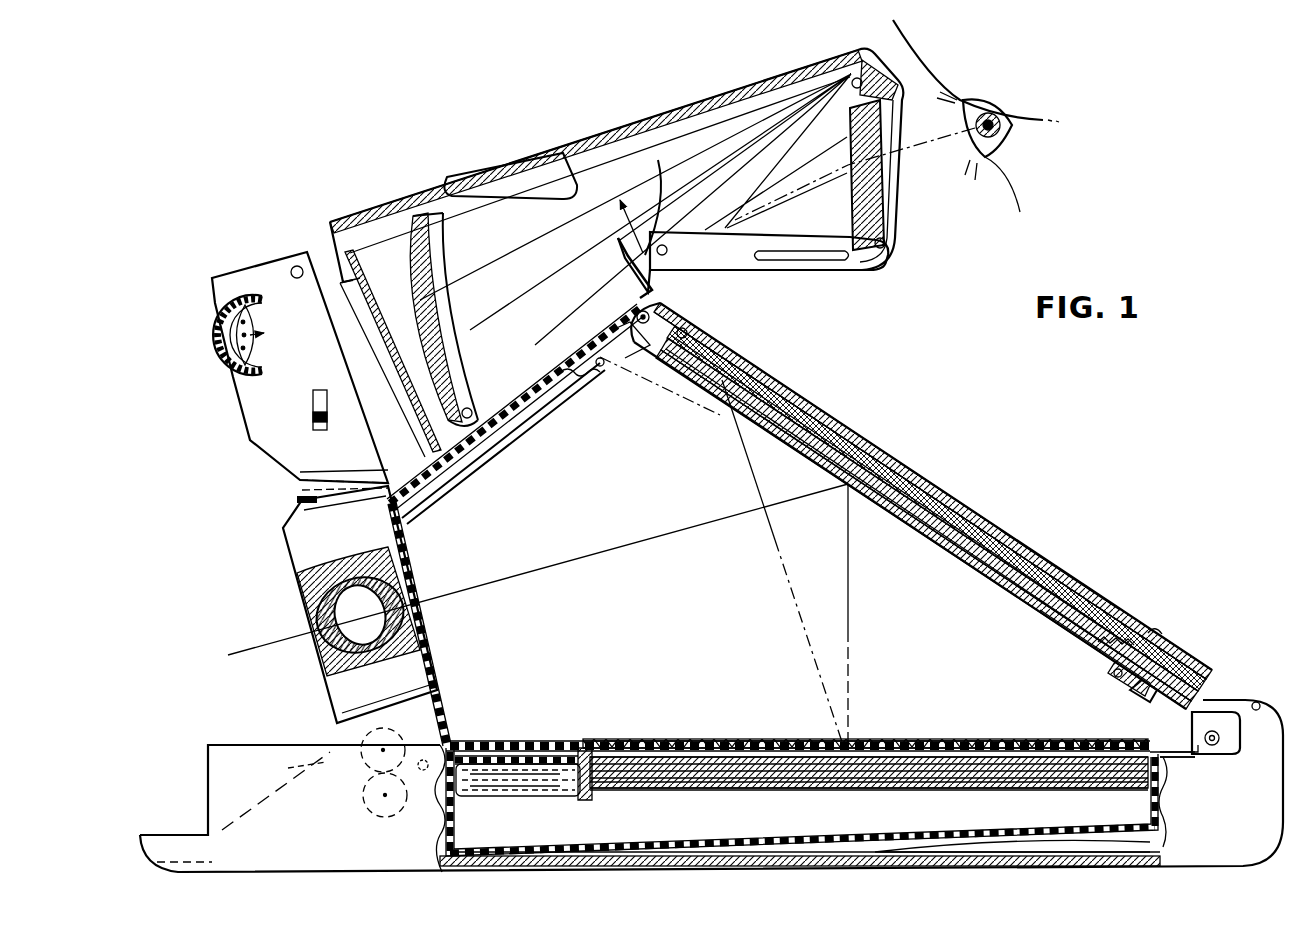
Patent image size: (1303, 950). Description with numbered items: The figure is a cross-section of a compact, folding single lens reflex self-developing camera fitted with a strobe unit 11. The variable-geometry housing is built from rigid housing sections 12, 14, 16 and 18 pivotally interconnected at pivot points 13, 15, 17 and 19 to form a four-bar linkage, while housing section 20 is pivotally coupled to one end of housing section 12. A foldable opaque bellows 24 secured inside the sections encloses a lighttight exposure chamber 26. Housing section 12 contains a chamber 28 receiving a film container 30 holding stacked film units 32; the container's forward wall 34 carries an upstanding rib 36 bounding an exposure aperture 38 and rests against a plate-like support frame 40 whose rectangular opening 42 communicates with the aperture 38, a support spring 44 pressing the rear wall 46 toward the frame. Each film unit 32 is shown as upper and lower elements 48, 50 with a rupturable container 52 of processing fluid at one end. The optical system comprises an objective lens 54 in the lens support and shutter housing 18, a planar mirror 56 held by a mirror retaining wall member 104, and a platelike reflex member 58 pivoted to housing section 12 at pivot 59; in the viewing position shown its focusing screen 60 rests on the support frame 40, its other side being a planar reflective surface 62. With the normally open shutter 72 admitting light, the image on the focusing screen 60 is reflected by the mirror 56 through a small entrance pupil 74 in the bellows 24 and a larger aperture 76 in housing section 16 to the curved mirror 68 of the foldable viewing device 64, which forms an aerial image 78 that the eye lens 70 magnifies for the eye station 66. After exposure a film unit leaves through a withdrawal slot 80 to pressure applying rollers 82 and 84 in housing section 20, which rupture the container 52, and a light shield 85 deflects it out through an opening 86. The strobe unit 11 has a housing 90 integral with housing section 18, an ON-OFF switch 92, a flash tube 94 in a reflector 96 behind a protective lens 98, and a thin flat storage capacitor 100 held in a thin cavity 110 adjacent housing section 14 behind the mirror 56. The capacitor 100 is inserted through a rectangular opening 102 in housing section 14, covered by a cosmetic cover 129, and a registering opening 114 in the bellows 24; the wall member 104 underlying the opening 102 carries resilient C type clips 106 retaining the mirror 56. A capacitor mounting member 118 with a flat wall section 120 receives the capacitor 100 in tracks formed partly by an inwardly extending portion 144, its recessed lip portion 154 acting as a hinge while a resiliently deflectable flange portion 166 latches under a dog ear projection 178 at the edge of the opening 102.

The strobe unit 11 is at (232, 402).
The first housing section 12 is at (1032, 866).
The pivot point 13 is at (1258, 700).
The housing section 14 is at (1060, 622).
The pivot point 15 is at (625, 292).
The housing section 16 is at (440, 450).
The pivot point 17 is at (360, 482).
The lens support and shutter housing 18 is at (300, 503).
The pivot point 19 is at (432, 708).
The housing section 20 is at (332, 872).
The bellows 24 is at (1202, 700).
The exposure chamber 26 is at (442, 532).
The chamber 28 is at (935, 850).
The film container 30 is at (1098, 838).
The film unit 32 is at (727, 794).
The forward wall 34 is at (530, 756).
The upstanding rib 36 is at (590, 750).
The exposure aperture 38 is at (662, 740).
The support frame 40 is at (470, 746).
The rectangular opening 42 is at (1118, 742).
The support spring 44 is at (814, 850).
The rear wall 46 is at (684, 858).
The upper element 48 is at (768, 780).
The lower element 50 is at (758, 757).
The rupturable container 52 is at (535, 796).
The objective lens 54 is at (318, 613).
The planar mirror 56 is at (946, 552).
The reflex member 58 is at (990, 727).
The pivot 59 is at (1208, 746).
The focusing screen 60 is at (896, 741).
The planar reflective surface 62 is at (850, 745).
The viewing device 64 is at (440, 172).
The eye station 66 is at (968, 156).
The curved mirror 68 is at (465, 285).
The eye lens 70 is at (850, 205).
The shutter 72 is at (378, 560).
The entrance pupil 74 is at (596, 366).
The aperture 76 is at (533, 380).
The aerial image 78 is at (670, 180).
The withdrawal slot 80 is at (447, 775).
The pressure applying roller 82 is at (404, 755).
The pressure applying roller 84 is at (362, 795).
The light shield 85 is at (290, 770).
The opening 86 is at (203, 866).
The strobe housing 90 is at (283, 258).
The ON-OFF switch 92 is at (313, 408).
The flash tube 94 is at (212, 322).
The reflector 96 is at (245, 300).
The lens 98 is at (212, 343).
The storage capacitor 100 is at (890, 477).
The rectangular opening 102 is at (700, 322).
The mirror retaining wall member 104 is at (1100, 640).
The C type clips 106 is at (1150, 702).
The cavity 110 is at (792, 401).
The rectangular opening 114 is at (1113, 672).
The capacitor mounting member 118 is at (1006, 526).
The wall section 120 is at (735, 340).
The cosmetic cover 129 is at (990, 512).
The inwardly extending portion 144 is at (726, 396).
The lip portion 154 is at (660, 318).
The flange portion 166 is at (1110, 640).
The dog ear projection 178 is at (1156, 644).